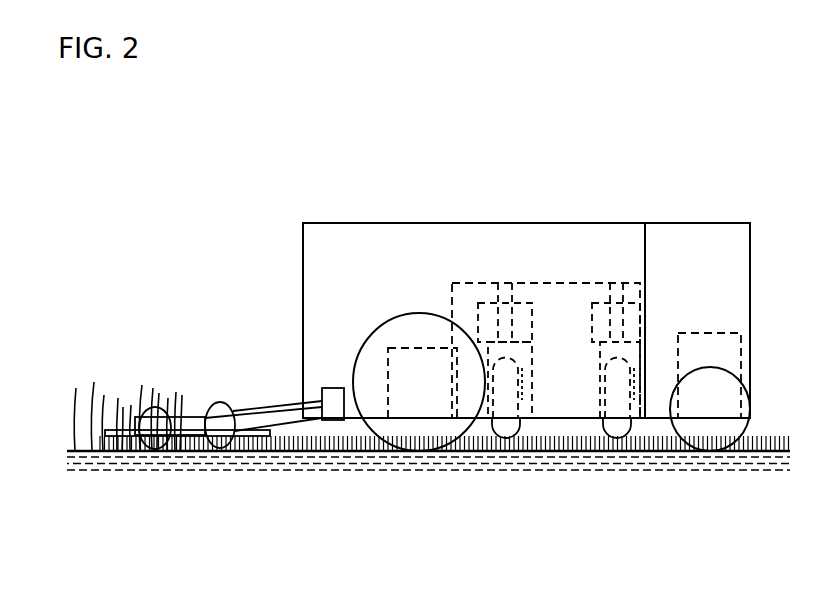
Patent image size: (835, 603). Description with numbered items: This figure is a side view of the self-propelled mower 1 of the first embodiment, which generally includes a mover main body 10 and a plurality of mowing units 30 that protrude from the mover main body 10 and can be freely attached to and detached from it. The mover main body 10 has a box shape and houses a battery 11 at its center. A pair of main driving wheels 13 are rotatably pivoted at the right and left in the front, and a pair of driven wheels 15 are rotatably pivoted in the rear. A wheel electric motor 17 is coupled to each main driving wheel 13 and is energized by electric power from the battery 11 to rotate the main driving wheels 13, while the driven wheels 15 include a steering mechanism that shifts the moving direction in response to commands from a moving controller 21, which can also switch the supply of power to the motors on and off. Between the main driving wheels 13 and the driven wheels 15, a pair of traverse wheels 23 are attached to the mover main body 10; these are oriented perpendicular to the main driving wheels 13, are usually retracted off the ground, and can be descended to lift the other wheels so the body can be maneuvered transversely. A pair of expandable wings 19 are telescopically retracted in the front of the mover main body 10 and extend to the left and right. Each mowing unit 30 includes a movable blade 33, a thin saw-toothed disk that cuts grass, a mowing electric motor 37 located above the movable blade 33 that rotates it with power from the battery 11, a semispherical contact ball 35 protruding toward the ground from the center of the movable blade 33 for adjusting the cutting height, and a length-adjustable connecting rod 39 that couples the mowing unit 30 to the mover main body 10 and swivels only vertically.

The self-propelled mower 1 is at (362, 155).
The mover main body 10 is at (558, 205).
The battery 11 is at (550, 325).
The main driving wheel 13 is at (412, 430).
The driven wheel 15 is at (704, 430).
The wheel electric motor 17 is at (430, 393).
The expandable wing 19 is at (322, 392).
The moving controller 21 is at (716, 352).
The traverse wheel 23 is at (503, 433).
The mowing unit 30 is at (317, 555).
The movable blade 33 is at (182, 450).
The contact ball 35 is at (219, 450).
The mowing electric motor 37 is at (268, 436).
The connecting rod 39 is at (290, 418).